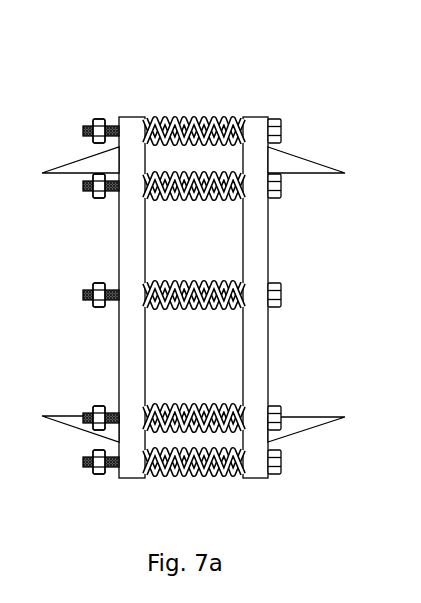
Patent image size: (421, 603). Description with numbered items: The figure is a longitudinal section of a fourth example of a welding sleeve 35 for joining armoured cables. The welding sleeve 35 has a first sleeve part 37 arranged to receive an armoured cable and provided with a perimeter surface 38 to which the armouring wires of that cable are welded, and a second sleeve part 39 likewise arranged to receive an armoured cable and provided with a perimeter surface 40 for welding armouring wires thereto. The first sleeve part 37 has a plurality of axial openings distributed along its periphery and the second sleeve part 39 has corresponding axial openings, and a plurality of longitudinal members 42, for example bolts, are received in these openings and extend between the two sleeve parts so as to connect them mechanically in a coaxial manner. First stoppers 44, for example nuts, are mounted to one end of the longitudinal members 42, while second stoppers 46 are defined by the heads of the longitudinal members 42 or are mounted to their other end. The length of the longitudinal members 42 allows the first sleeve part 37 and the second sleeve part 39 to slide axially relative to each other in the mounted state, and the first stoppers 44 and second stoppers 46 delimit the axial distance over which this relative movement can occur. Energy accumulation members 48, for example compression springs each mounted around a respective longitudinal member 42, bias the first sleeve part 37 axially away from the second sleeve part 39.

The welding sleeve 35 is at (310, 64).
The first sleeve part 37 is at (126, 117).
The second sleeve part 39 is at (248, 117).
The perimeter surface 38 is at (56, 173).
The perimeter surface 40 is at (332, 162).
The longitudinal members 42 is at (80, 127).
The first stoppers 44 is at (97, 118).
The second stoppers 46 is at (283, 130).
The energy accumulation members 48 is at (200, 118).